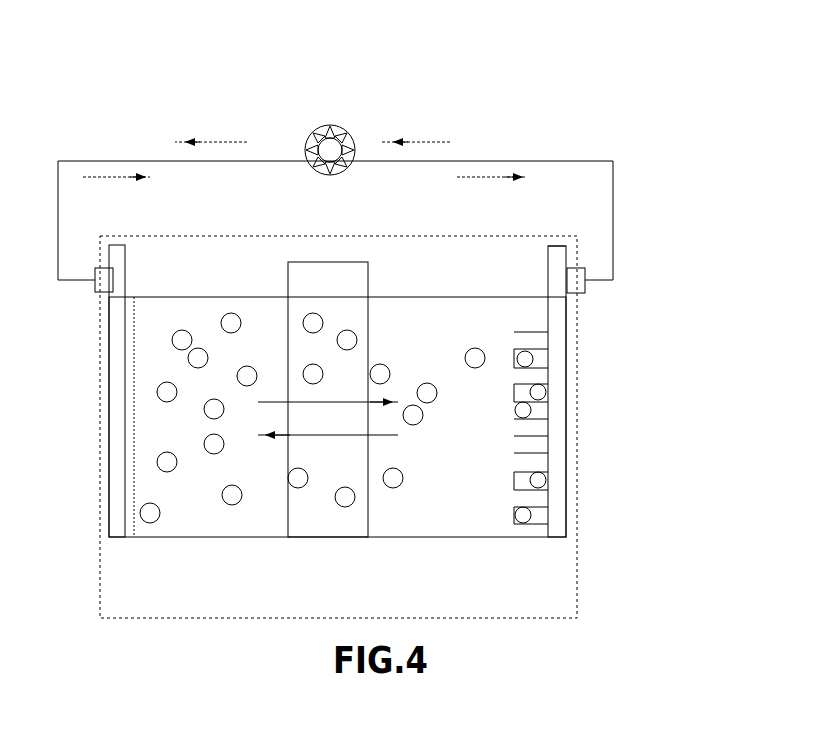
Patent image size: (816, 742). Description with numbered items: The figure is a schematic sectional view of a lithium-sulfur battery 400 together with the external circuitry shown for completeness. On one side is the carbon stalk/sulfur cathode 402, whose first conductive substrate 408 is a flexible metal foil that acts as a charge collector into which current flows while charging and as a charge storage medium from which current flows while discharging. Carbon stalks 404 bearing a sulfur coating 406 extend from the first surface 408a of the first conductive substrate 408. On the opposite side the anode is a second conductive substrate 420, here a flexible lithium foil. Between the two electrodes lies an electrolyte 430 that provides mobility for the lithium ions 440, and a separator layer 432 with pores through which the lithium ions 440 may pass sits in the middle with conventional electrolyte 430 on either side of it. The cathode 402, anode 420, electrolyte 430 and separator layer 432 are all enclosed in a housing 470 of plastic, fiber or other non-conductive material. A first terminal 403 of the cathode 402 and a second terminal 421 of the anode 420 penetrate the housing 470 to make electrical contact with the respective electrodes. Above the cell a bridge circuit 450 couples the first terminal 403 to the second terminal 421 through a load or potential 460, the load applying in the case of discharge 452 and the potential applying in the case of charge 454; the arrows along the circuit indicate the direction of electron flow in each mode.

The lithium-sulfur battery 400 is at (632, 52).
The carbon stalk/sulfur cathode 402 is at (548, 250).
The first terminal 403 is at (586, 296).
The carbon stalks 404 is at (566, 388).
The sulfur coating 406 is at (566, 388).
The first conductive substrate 408 is at (562, 445).
The first surface of the first conductive substrate 408a is at (542, 242).
The second conductive substrate 420 is at (122, 268).
The second terminal 421 is at (97, 295).
The electrolyte 430 is at (433, 449).
The separator layer 432 is at (315, 507).
The lithium ions 440 is at (426, 383).
The bridge circuit 450 is at (590, 161).
The discharge 452 is at (428, 141).
The charge 454 is at (343, 172).
The load/charge potential 460 is at (329, 144).
The housing 470 is at (100, 510).